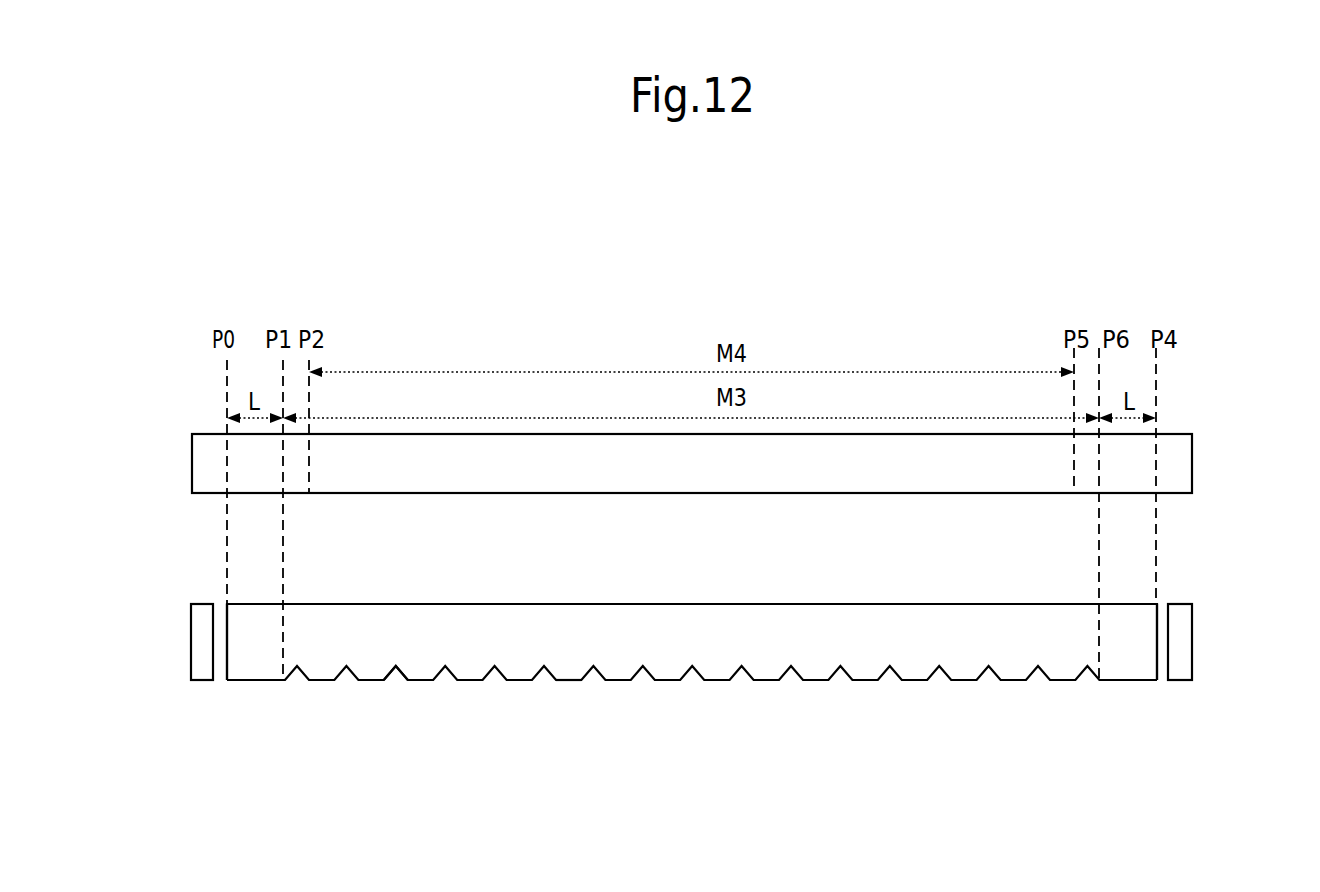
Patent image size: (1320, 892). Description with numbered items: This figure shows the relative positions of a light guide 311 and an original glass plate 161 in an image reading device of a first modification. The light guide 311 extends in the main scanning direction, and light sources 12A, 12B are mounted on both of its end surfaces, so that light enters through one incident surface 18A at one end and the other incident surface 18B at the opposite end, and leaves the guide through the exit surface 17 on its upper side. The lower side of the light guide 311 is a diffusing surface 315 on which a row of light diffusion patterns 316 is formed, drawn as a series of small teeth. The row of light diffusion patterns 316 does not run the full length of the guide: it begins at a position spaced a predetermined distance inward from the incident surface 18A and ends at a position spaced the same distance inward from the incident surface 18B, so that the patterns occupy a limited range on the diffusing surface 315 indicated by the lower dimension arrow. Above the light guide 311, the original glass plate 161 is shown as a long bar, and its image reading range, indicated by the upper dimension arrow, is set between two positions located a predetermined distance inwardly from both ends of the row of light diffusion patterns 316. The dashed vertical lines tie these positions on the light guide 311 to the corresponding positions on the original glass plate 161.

The light source 12A is at (191, 640).
The light source 12B is at (1192, 647).
The exit surface 17 is at (630, 604).
The incident surface 18A is at (227, 672).
The incident surface 18B is at (1157, 682).
The original glass plate 161 is at (917, 493).
The light guide 311 is at (745, 592).
The diffusing surface 315 is at (567, 682).
The light diffusion patterns 316 is at (399, 682).